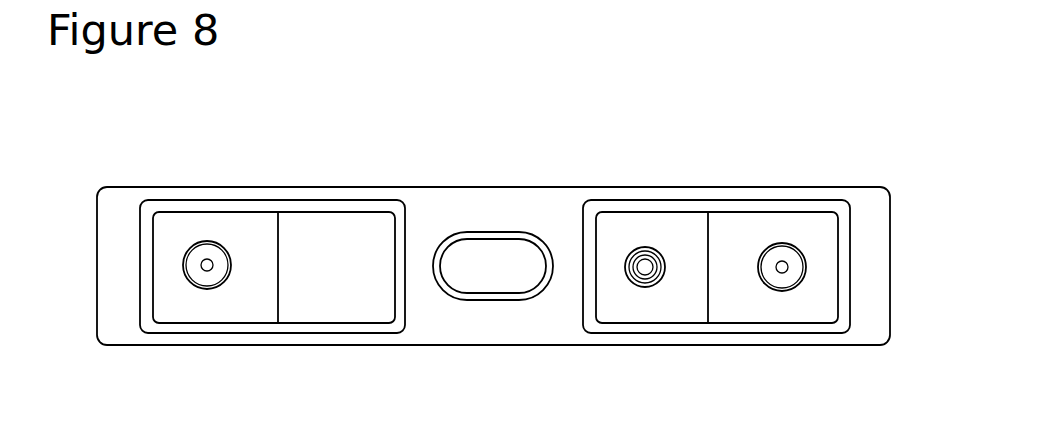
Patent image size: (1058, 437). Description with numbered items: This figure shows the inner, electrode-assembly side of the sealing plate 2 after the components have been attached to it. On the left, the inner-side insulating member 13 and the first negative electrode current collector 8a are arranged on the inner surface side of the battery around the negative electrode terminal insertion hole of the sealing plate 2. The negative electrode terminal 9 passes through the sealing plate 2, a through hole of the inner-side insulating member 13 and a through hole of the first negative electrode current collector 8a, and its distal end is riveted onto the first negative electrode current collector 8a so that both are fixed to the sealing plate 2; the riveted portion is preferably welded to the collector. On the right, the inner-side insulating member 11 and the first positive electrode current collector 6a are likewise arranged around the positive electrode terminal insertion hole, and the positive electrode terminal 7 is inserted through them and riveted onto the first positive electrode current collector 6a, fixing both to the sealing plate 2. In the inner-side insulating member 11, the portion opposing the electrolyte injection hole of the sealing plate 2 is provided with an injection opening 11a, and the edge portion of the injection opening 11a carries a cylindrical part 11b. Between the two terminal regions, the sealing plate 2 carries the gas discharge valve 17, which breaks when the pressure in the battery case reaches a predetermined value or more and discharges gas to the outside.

The sealing plate 2 is at (488, 213).
The first negative electrode current collector 8a is at (180, 238).
The negative electrode terminal 9 is at (197, 268).
The inner-side insulating member 13 is at (313, 268).
The gas discharge valve 17 is at (498, 257).
The inner-side insulating member 11 is at (640, 237).
The injection opening 11a is at (643, 285).
The cylindrical part 11b is at (625, 267).
The first positive electrode current collector 6a is at (808, 238).
The positive electrode terminal 7 is at (792, 267).